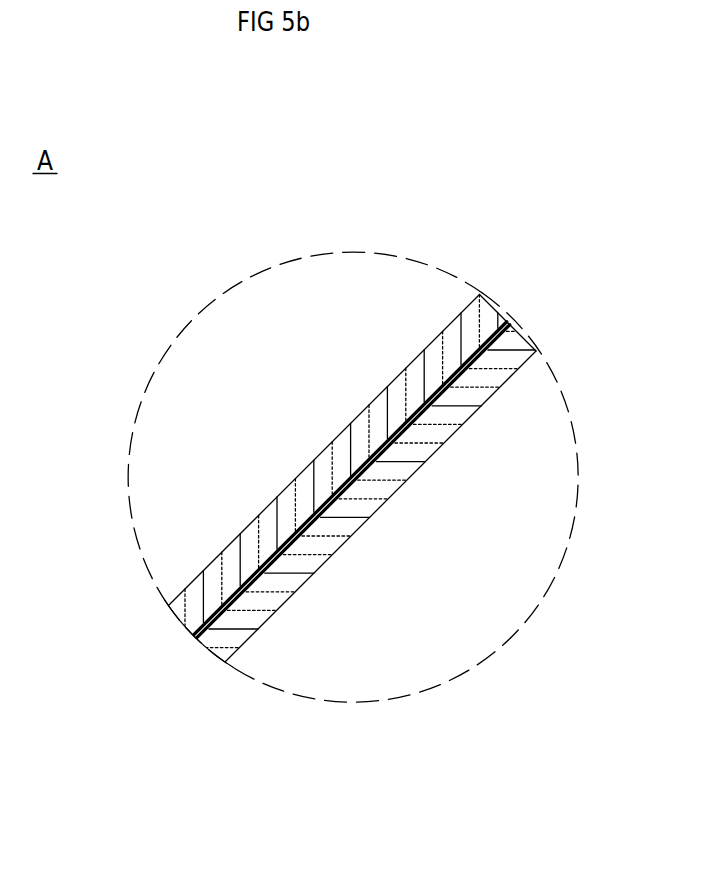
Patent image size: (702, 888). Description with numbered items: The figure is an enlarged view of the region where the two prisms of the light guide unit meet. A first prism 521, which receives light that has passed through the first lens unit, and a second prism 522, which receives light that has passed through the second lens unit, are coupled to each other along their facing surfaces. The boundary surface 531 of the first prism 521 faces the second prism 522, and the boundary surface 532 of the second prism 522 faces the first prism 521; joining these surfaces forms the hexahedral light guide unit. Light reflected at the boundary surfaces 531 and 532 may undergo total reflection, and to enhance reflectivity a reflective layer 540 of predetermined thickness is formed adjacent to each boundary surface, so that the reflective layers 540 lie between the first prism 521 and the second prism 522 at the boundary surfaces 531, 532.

The first prism 521 is at (470, 653).
The second prism 522 is at (236, 299).
The boundary surface of the first prism 531 is at (264, 550).
The boundary surface of the second prism 532 is at (433, 383).
The reflective layer 540 is at (518, 353).